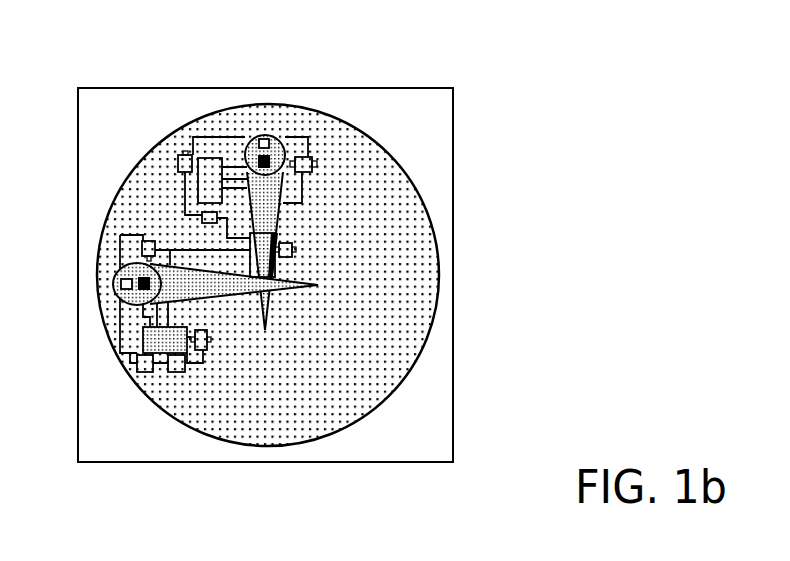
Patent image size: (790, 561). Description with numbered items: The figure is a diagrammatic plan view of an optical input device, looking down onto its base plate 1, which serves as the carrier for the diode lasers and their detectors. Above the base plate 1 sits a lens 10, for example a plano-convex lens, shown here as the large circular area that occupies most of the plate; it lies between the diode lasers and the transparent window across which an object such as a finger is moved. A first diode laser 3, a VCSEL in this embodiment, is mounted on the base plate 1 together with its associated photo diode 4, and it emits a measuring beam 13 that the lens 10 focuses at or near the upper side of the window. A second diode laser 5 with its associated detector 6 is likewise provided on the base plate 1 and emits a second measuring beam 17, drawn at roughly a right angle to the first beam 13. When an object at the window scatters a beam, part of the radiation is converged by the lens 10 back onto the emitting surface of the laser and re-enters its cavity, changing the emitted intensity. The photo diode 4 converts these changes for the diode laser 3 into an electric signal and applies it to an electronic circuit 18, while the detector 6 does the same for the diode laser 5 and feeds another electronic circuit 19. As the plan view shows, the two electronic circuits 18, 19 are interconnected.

The base plate 1 is at (436, 125).
The lens 10 is at (348, 145).
The diode laser 3 is at (266, 148).
The photo diode 4 is at (258, 160).
The electronic circuit 18 is at (304, 150).
The measuring beam 13 is at (292, 205).
The electronic circuit 19 is at (121, 238).
The second diode laser 5 is at (124, 285).
The detector 6 is at (130, 304).
The measuring beam 17 is at (212, 300).